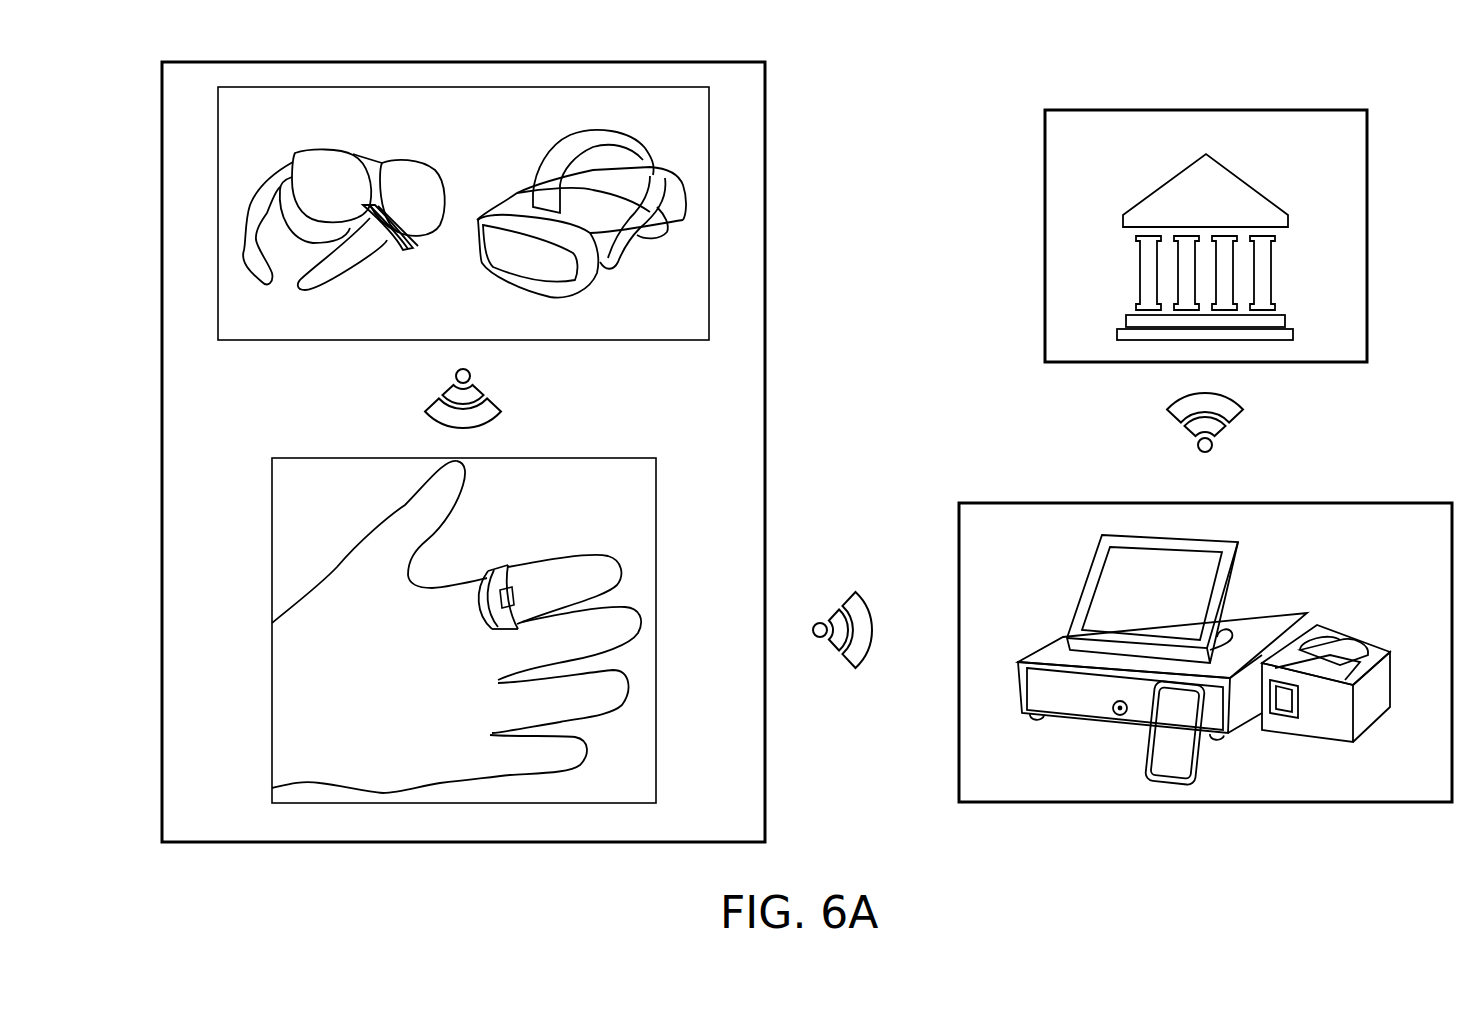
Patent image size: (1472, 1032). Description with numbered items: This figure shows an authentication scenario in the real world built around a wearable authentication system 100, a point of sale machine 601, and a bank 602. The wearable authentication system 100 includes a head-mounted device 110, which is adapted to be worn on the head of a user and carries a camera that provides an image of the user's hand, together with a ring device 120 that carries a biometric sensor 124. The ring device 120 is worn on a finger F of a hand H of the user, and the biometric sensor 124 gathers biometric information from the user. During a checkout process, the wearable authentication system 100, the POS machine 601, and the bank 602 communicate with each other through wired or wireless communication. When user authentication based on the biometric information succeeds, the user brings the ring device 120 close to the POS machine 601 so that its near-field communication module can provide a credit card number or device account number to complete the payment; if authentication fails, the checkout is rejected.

The wearable authentication system 100 is at (463, 62).
The head-mounted device 110 is at (217, 212).
The ring device 120 is at (503, 637).
The biometric sensor 124 is at (477, 605).
The hand H is at (353, 537).
The finger F is at (622, 566).
The POS machine 601 is at (1075, 503).
The bank 602 is at (1161, 110).